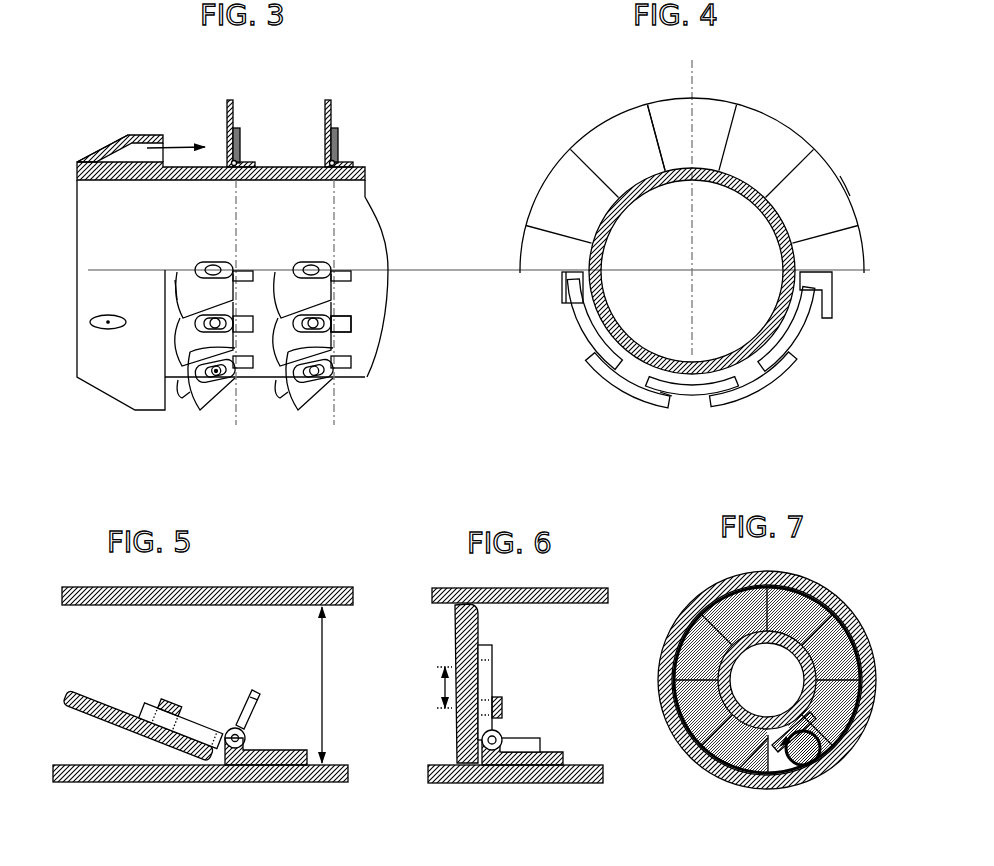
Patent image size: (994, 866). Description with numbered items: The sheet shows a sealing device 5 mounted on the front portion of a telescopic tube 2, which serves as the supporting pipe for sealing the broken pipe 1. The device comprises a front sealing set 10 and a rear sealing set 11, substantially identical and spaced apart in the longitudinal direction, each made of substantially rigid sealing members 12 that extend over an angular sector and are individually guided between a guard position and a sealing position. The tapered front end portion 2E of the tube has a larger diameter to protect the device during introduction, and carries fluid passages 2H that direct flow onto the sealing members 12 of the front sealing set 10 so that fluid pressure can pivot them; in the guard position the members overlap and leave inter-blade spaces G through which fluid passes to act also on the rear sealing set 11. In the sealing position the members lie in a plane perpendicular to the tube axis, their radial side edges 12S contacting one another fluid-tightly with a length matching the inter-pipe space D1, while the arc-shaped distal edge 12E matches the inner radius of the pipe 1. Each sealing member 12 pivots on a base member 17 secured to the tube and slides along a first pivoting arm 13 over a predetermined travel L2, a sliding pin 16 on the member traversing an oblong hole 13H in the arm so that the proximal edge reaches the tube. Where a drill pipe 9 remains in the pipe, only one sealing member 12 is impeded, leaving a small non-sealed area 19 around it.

In FIG. 5, the pipe 1 is at (183, 597).
In FIG. 6, the pipe 1 is at (520, 595).
In FIG. 7, the pipe 1 is at (736, 582).
In FIG. 3, the telescopic tube 2 is at (372, 198).
In FIG. 4, the telescopic tube 2 is at (601, 231).
In FIG. 5, the telescopic tube 2 is at (118, 773).
In FIG. 6, the telescopic tube 2 is at (515, 774).
In FIG. 7, the telescopic tube 2 is at (810, 650).
In FIG. 3, the front end portion 2E is at (78, 161).
In FIG. 3, the fluid passages 2H is at (110, 327).
In FIG. 3, the sealing device 5 is at (318, 135).
In FIG. 7, the drill pipe 9 is at (803, 740).
In FIG. 3, the front sealing set 10 is at (204, 407).
In FIG. 4, the front sealing set 10 is at (577, 130).
In FIG. 3, the rear sealing set 11 is at (313, 405).
In FIG. 3, the sealing member 12 is at (228, 108).
In FIG. 4, the sealing member 12 is at (770, 146).
In FIG. 5, the sealing member 12 is at (90, 700).
In FIG. 6, the sealing member 12 is at (466, 683).
In FIG. 7, the sealing member 12 is at (735, 770).
In FIG. 4, the side edge 12S is at (653, 132).
In FIG. 4, the distal edge 12E is at (838, 183).
In FIG. 3, the first pivoting arm 13 is at (335, 128).
In FIG. 5, the first pivoting arm 13 is at (253, 712).
In FIG. 5, the oblong hole 13H is at (190, 725).
In FIG. 6, the oblong hole 13H is at (488, 681).
In FIG. 3, the sliding pin 16 is at (210, 371).
In FIG. 5, the sliding pin 16 is at (179, 698).
In FIG. 6, the sliding pin 16 is at (504, 708).
In FIG. 3, the base member 17 is at (346, 320).
In FIG. 5, the base member 17 is at (270, 756).
In FIG. 6, the base member 17 is at (522, 747).
In FIG. 7, the non-sealed area 19 is at (779, 764).
In FIG. 3, the inter-blade space G is at (182, 288).
In FIG. 4, the inter-blade space G is at (668, 393).
In FIG. 5, the inter-pipe space D1 is at (341, 685).
In FIG. 6, the predetermined travel L2 is at (432, 688).